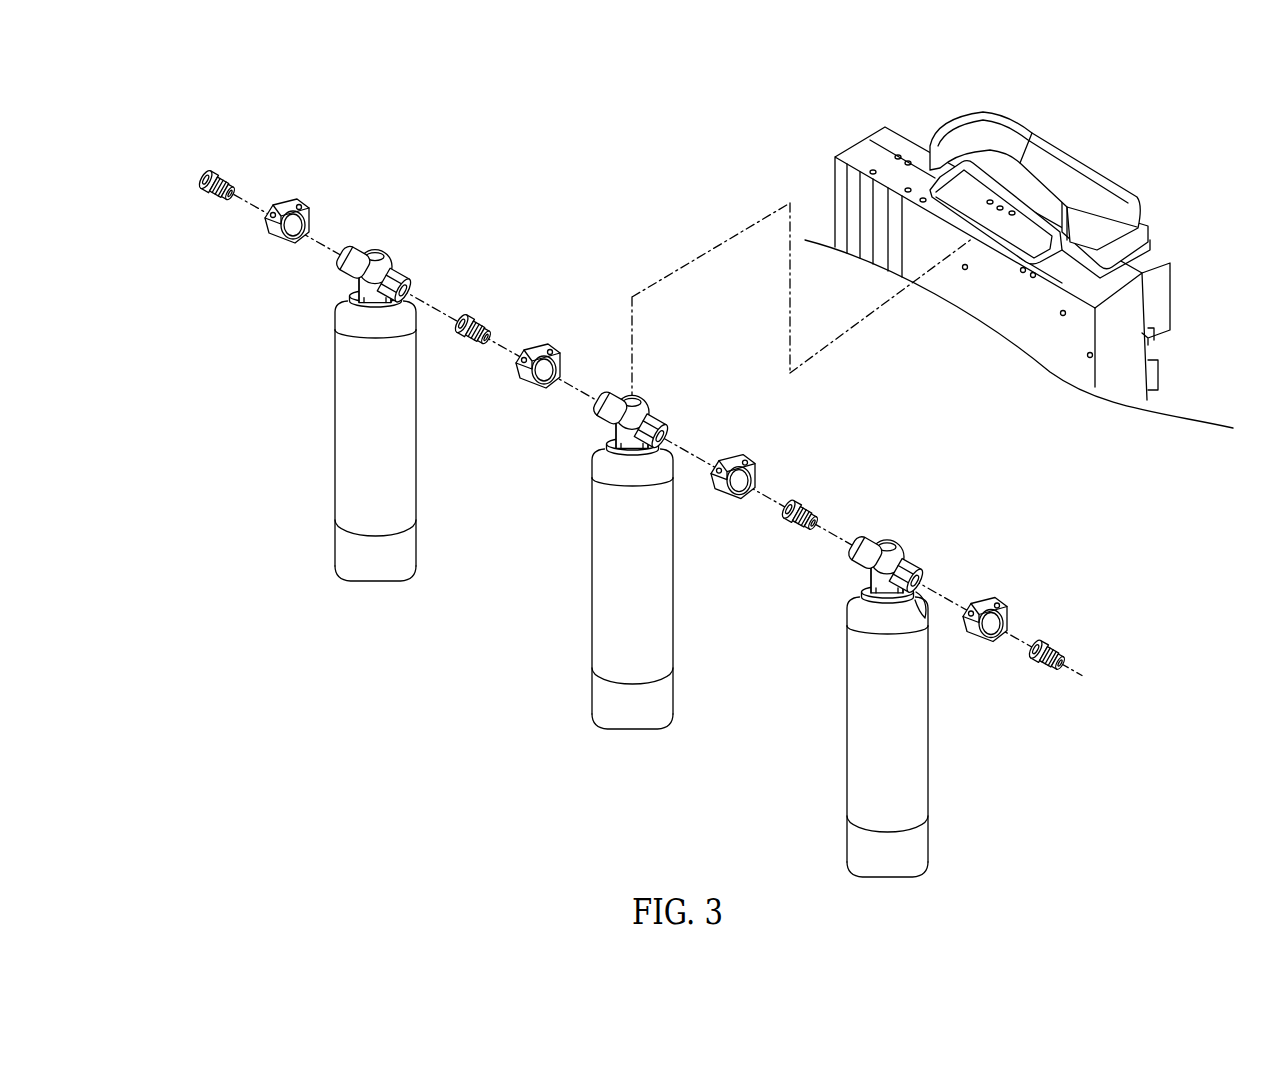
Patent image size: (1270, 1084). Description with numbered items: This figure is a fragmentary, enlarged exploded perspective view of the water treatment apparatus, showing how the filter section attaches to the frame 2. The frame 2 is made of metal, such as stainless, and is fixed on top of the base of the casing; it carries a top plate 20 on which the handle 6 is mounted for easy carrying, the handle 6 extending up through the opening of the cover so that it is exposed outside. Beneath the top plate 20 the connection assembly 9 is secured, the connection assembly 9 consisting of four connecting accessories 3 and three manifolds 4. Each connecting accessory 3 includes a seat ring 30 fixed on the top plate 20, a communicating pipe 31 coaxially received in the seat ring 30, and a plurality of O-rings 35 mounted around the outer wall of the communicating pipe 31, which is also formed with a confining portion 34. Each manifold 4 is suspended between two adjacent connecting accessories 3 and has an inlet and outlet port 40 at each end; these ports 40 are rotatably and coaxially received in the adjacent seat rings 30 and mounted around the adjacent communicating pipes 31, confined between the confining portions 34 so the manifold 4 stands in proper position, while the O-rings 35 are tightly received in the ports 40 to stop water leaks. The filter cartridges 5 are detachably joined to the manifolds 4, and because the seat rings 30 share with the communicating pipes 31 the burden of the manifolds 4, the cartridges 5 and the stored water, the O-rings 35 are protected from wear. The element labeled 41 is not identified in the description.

The frame 2 is at (1021, 252).
The connecting accessory 3 is at (628, 402).
The manifold 4 is at (633, 398).
The filter cartridge 5 is at (343, 423).
The handle 6 is at (1093, 183).
The connection assembly 9 is at (1102, 683).
The top plate 20 is at (878, 142).
The seat ring 30 is at (287, 196).
The communicating pipe 31 is at (628, 422).
The confining portion 34 is at (201, 191).
The O-ring 35 is at (221, 183).
The inlet and outlet port 40 is at (353, 257).
The hook tab 41 is at (919, 600).